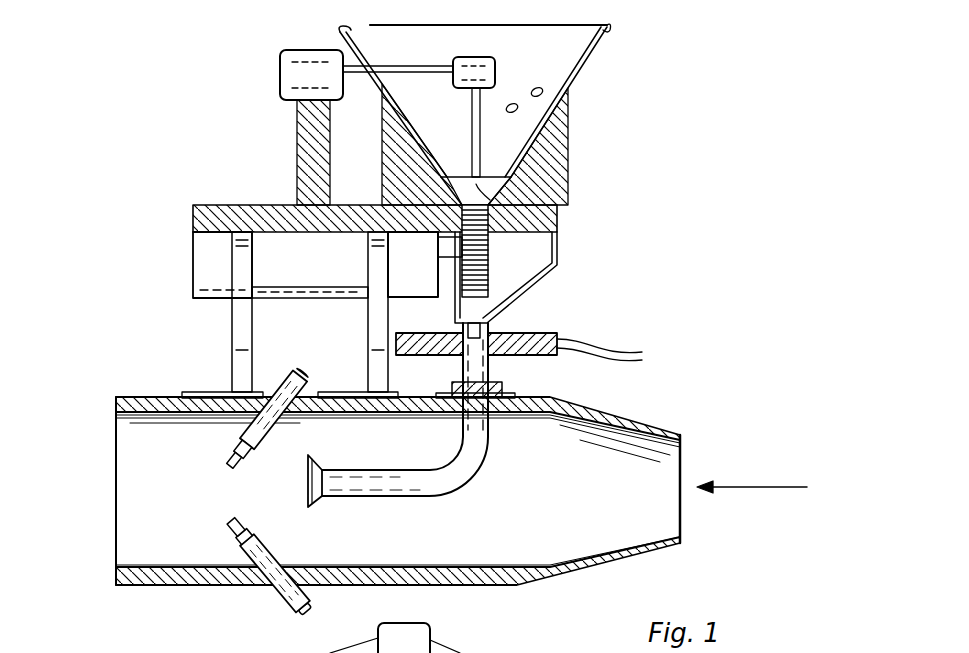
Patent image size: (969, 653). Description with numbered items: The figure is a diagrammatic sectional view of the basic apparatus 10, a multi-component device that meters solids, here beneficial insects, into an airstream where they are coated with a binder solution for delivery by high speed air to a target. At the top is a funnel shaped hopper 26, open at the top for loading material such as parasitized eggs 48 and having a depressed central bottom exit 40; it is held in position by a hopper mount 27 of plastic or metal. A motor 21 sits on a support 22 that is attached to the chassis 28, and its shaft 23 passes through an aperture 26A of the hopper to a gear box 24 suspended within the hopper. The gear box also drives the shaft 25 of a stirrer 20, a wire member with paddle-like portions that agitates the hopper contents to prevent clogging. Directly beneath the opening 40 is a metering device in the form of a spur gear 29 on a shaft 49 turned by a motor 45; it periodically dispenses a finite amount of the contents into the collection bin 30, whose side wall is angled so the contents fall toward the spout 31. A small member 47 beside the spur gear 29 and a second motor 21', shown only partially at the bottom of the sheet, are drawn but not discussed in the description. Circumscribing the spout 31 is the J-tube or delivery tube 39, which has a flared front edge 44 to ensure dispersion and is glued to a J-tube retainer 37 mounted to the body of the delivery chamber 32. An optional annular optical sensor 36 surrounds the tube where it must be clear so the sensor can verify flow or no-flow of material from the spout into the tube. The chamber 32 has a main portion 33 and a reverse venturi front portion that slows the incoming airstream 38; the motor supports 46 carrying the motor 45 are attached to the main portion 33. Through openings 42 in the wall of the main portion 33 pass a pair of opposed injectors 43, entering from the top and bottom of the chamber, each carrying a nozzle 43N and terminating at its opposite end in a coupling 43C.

The apparatus 10 is at (130, 147).
The stirrer 20 is at (460, 190).
The motor 21 is at (276, 75).
The second drive motor 21' is at (416, 634).
The support 22 is at (290, 150).
The shaft 23 is at (405, 65).
The gear box 24 is at (470, 63).
The shaft 25 is at (472, 110).
The hopper 26 is at (590, 58).
The aperture 26A is at (373, 27).
The hopper mount 27 is at (568, 155).
The chassis 28 is at (548, 218).
The spur gear 29 is at (490, 255).
The collection bin 30 is at (535, 280).
The spout 31 is at (497, 328).
The delivery chamber 32 is at (98, 525).
The main portion 33 is at (168, 587).
The sensor 36 is at (618, 345).
The J-tube retainer 37 is at (505, 390).
The incoming airstream 38 is at (742, 487).
The J-tube 39 is at (465, 478).
The bottom exit 40 is at (490, 200).
The openings 42 is at (296, 558).
The injectors 43 is at (245, 533).
The coupling 43C is at (320, 352).
The nozzle 43N is at (233, 450).
The flared front edge 44 is at (313, 460).
The motor 45 is at (212, 262).
The motor supports 46 is at (236, 333).
The pinion 47 is at (440, 253).
The parasitized eggs 48 is at (543, 95).
The shaft 49 is at (453, 262).